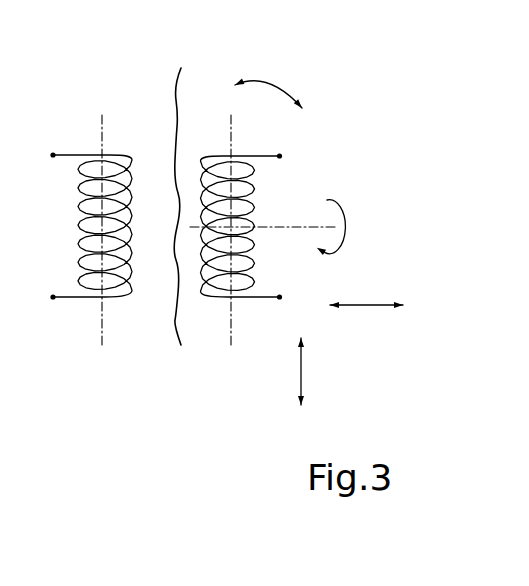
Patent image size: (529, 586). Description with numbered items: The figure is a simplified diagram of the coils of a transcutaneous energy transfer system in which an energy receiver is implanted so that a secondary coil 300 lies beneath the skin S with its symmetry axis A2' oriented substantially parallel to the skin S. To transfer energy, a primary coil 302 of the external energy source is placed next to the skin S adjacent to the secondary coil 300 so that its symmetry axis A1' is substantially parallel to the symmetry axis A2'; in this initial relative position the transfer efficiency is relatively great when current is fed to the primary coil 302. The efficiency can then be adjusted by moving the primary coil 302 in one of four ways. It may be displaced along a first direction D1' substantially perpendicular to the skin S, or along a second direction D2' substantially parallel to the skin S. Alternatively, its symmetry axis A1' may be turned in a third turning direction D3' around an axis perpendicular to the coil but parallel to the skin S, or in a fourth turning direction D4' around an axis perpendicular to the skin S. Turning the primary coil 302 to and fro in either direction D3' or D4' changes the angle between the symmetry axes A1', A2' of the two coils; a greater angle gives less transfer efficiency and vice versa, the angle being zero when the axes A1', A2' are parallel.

The secondary coil 300 is at (80, 209).
The primary coil 302 is at (254, 208).
The skin S is at (172, 188).
The symmetry axis of the primary coil A1' is at (224, 250).
The symmetry axis of the secondary coil A2' is at (98, 250).
The first direction D1' is at (366, 321).
The second direction D2' is at (328, 371).
The third turning direction D3' is at (277, 80).
The fourth turning direction D4' is at (293, 226).